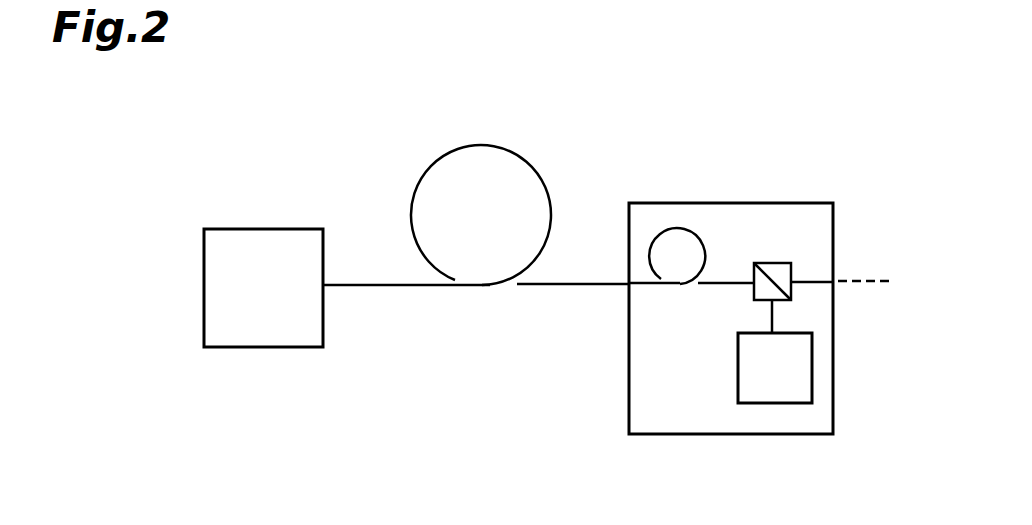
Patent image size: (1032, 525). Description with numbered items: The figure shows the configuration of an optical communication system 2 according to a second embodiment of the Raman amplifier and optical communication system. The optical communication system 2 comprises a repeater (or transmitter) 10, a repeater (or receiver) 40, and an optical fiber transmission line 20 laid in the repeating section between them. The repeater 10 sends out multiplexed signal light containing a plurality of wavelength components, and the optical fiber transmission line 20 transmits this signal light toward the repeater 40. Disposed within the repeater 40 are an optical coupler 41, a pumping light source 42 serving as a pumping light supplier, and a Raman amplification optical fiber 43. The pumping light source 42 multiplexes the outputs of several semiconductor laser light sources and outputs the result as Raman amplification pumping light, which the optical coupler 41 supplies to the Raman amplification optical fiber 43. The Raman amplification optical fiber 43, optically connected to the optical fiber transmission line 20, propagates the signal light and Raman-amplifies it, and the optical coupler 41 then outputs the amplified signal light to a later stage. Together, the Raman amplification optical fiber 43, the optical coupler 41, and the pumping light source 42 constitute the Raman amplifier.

The optical communication system 2 is at (619, 121).
The repeater (or transmitter) 10 is at (267, 229).
The optical fiber transmission line 20 is at (437, 163).
The repeater (or receiver) 40 is at (808, 203).
The optical coupler 41 is at (774, 263).
The pumping light source 42 is at (772, 405).
The Raman amplification optical fiber 43 is at (680, 228).